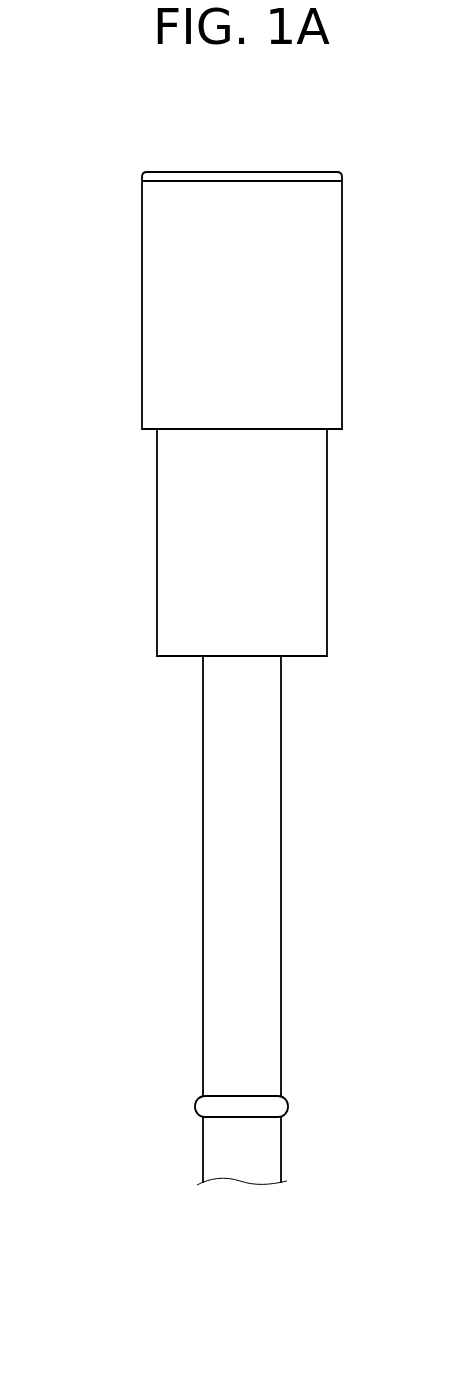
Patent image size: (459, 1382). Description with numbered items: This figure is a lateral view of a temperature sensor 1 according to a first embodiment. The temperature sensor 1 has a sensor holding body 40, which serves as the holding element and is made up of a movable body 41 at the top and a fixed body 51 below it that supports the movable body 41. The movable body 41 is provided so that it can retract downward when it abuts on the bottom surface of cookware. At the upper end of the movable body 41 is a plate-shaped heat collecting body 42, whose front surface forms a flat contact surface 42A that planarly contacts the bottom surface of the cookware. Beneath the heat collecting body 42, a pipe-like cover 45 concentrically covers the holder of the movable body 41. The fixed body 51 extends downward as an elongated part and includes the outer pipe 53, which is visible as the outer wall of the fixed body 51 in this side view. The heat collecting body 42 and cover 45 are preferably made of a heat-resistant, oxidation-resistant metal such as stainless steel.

The temperature sensor 1 is at (219, 639).
The sensor holding body 40 is at (219, 651).
The movable body 41 is at (219, 387).
The heat collecting body 42 is at (271, 150).
The contact surface 42A is at (230, 171).
The cover 45 is at (345, 413).
The fixed body 51 is at (209, 920).
The outer pipe 53 is at (283, 873).